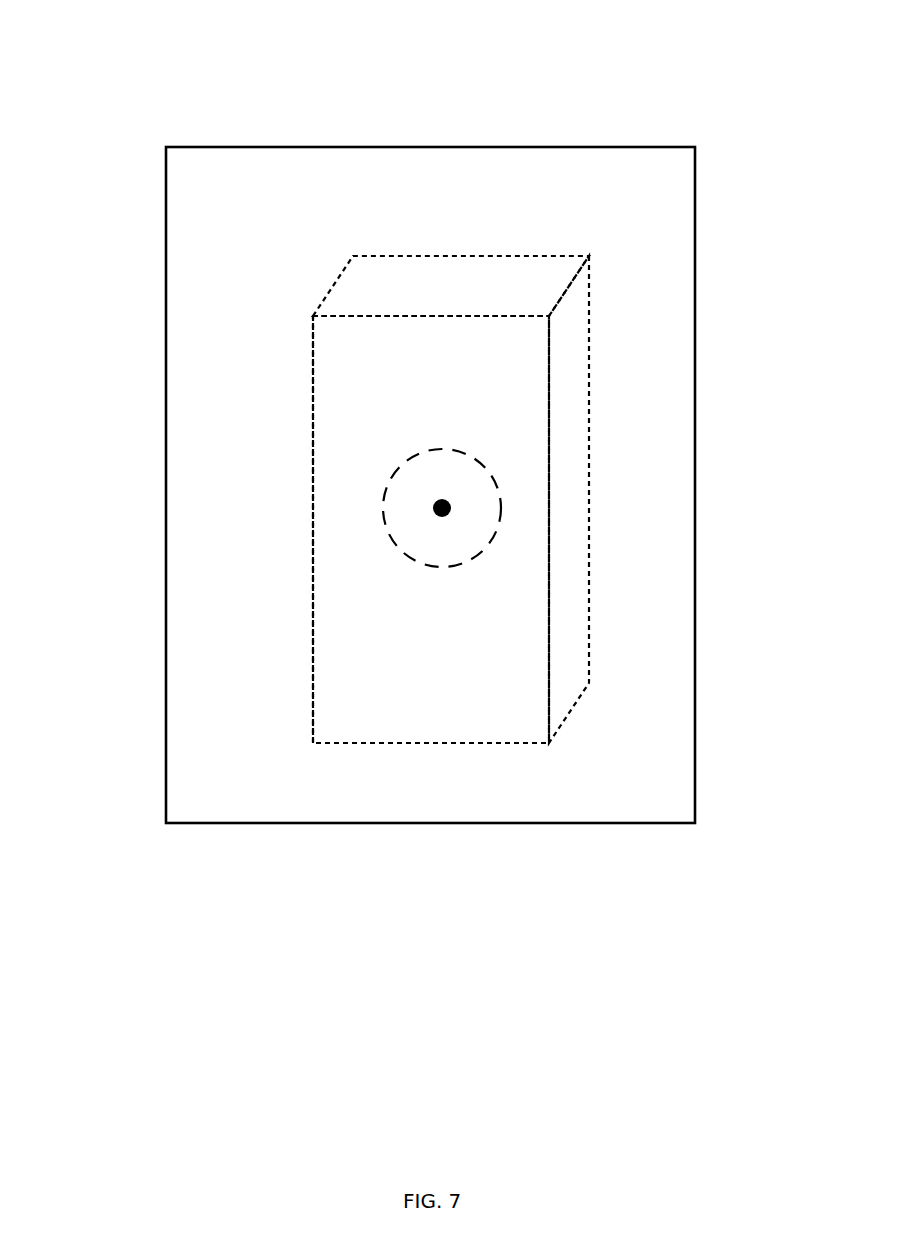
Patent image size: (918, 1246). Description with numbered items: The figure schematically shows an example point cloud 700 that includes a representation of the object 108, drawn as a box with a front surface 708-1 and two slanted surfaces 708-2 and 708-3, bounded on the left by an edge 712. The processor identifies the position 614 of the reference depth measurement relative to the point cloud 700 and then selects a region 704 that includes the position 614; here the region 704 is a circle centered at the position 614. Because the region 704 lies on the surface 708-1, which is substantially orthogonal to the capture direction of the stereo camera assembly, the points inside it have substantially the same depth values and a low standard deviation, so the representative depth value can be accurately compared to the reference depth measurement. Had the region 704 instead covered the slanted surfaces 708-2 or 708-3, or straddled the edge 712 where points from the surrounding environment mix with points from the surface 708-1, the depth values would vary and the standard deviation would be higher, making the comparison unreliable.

The point cloud 700 is at (436, 140).
The object 108 is at (436, 382).
The surface 708-1 is at (526, 414).
The surface 708-2 is at (568, 336).
The surface 708-3 is at (382, 282).
The edge 712 is at (312, 530).
The region 704 is at (483, 465).
The position 614 is at (450, 508).